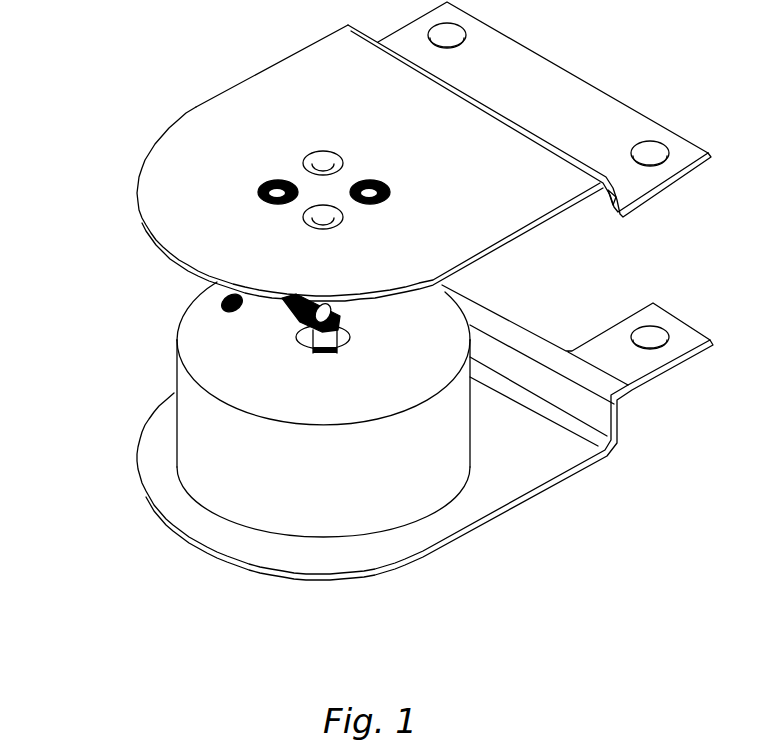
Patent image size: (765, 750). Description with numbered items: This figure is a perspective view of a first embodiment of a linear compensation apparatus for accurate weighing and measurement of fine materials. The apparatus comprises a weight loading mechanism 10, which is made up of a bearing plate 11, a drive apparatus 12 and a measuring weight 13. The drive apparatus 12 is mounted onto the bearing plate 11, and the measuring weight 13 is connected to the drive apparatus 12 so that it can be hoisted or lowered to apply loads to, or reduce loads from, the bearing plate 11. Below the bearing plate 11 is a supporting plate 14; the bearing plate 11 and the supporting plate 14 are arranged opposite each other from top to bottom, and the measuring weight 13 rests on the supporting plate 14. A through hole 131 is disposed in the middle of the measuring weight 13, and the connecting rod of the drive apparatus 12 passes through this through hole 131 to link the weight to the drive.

The weight loading mechanism 10 is at (114, 130).
The bearing plate 11 is at (245, 128).
The drive apparatus 12 is at (283, 302).
The measuring weight 13 is at (267, 493).
The through hole 131 is at (295, 346).
The supporting plate 14 is at (498, 486).